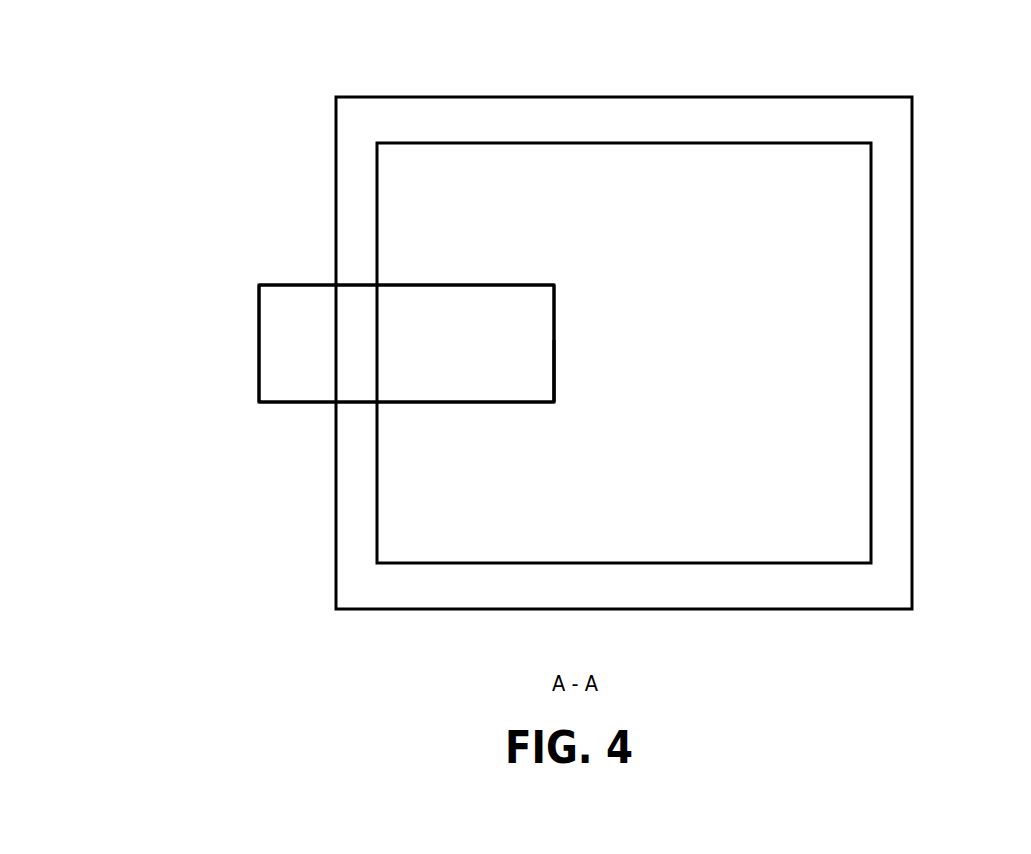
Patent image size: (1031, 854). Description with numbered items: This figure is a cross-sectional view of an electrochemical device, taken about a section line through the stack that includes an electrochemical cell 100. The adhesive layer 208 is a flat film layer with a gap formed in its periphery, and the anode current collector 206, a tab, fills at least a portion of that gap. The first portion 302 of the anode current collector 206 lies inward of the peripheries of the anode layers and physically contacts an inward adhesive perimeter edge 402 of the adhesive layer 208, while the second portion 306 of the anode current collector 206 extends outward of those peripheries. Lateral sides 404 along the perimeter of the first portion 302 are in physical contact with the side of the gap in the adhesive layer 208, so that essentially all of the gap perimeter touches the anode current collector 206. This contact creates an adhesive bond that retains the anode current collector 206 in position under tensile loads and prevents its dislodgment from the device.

The electrochemical cell 100 is at (790, 610).
The anode current collector 206 is at (308, 312).
The adhesive layer 208 is at (817, 368).
The first portion 302 is at (556, 326).
The second portion 306 is at (259, 340).
The inward adhesive perimeter edge 402 is at (554, 367).
The lateral sides 404 is at (438, 285).